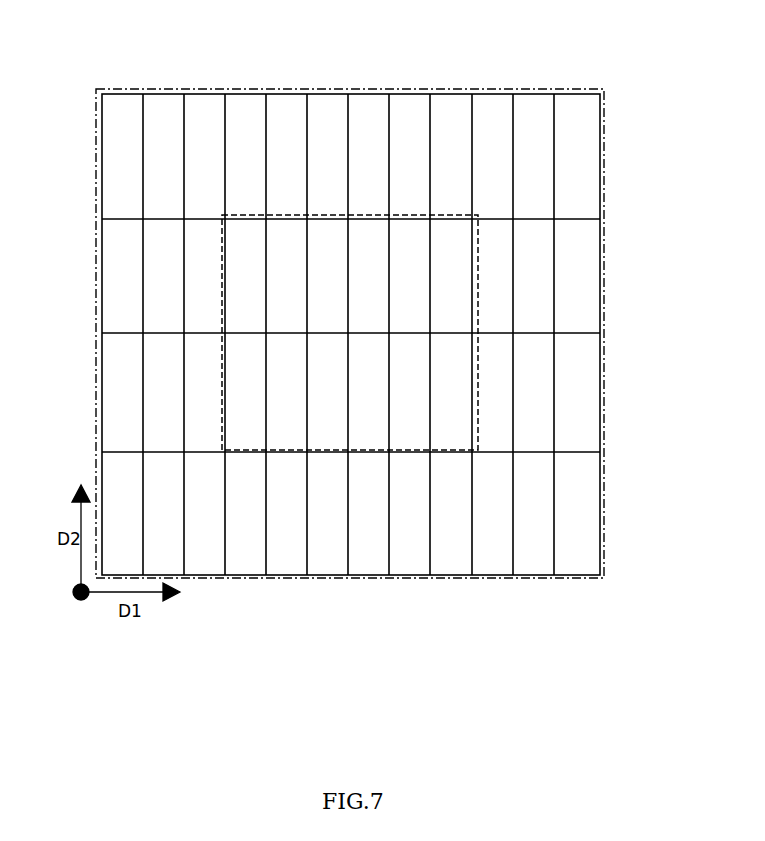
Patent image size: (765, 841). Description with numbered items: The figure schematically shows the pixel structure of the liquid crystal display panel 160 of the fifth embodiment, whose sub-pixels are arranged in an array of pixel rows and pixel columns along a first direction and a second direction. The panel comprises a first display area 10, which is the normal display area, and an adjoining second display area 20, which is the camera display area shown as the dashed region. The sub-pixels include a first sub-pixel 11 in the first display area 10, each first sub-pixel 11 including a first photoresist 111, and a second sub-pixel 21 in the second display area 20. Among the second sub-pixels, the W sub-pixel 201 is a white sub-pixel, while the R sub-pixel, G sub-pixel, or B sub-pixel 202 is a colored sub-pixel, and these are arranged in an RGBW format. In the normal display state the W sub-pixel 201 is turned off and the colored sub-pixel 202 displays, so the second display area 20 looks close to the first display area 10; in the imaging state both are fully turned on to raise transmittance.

The liquid crystal display panel 160 is at (369, 21).
The first display area 10 is at (604, 129).
The first sub-pixel 11 is at (117, 127).
The first photoresist 111 is at (162, 115).
The second display area 20 is at (223, 317).
The W sub-pixel 201 is at (413, 243).
The second sub-pixel 21 is at (460, 260).
The R sub-pixel, G sub-pixel, or B sub-pixel 202 is at (368, 316).